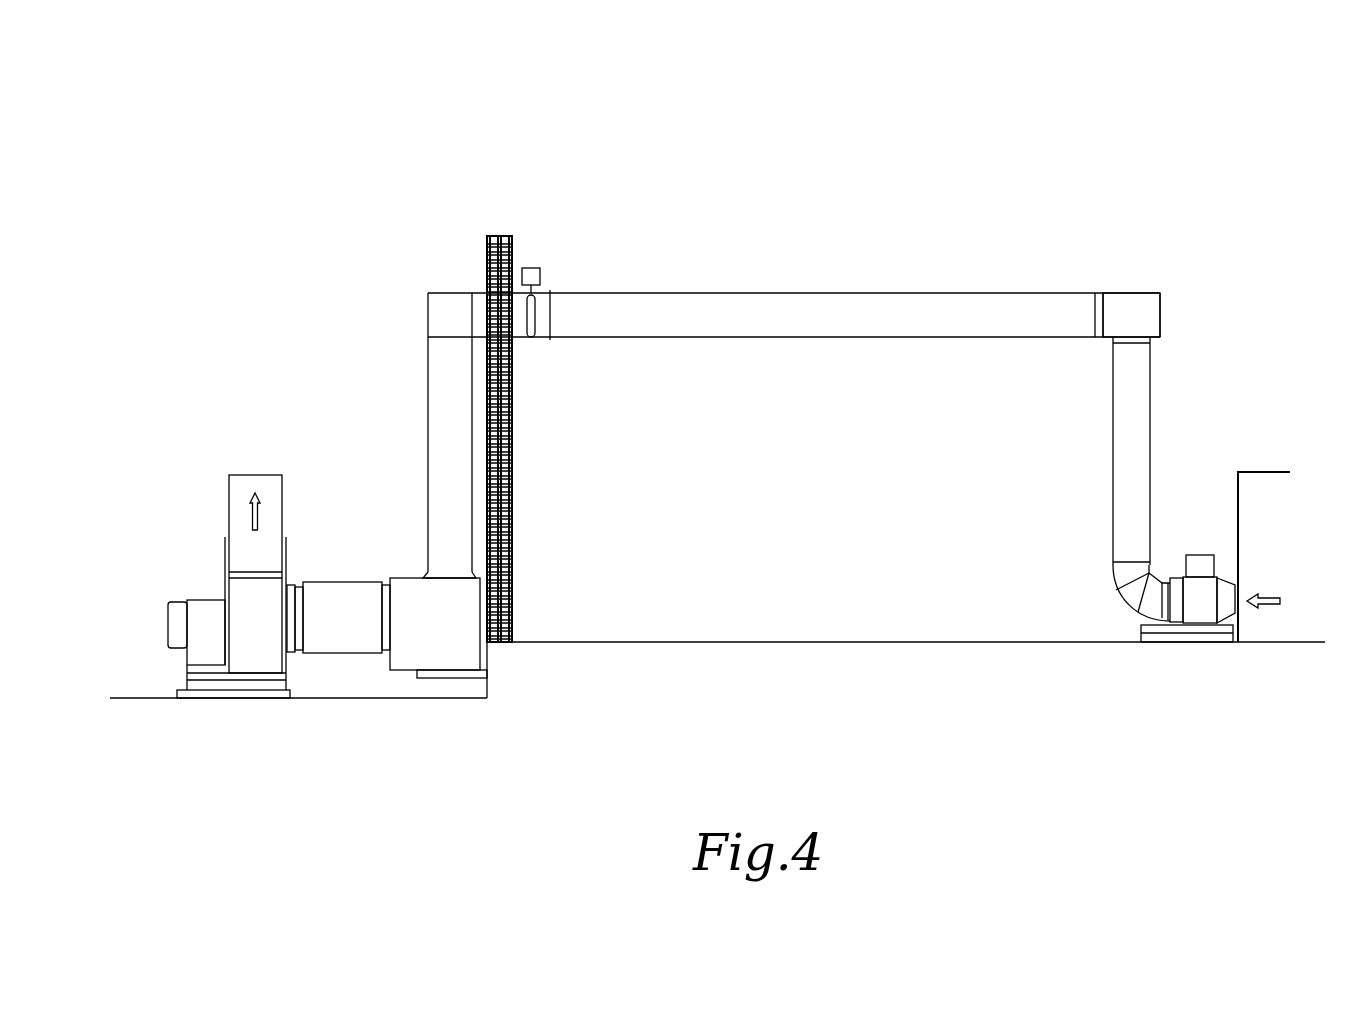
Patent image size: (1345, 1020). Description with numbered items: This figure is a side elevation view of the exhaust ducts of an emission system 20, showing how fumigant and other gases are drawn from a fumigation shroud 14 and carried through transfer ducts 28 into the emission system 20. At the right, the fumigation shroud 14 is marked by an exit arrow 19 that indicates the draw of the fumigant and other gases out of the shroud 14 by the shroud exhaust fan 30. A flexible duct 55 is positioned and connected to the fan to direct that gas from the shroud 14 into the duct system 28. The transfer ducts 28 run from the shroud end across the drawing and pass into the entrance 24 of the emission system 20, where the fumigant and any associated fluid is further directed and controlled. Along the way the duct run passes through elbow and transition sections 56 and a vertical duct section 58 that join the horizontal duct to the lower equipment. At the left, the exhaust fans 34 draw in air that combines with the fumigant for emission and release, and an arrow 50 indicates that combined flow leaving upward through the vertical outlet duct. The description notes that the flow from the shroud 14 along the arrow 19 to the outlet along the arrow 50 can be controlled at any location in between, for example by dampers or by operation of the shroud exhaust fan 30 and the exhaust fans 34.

The emission system 20 is at (526, 80).
The transfer duct 28 is at (895, 293).
The duct elbow 58 is at (448, 293).
The duct transition 56 is at (447, 672).
The entrance 24 is at (362, 655).
The exhaust fan 34 is at (206, 657).
The arrow 50 is at (252, 515).
The flexible duct 55 is at (1128, 602).
The exhaust fan 30 is at (1203, 618).
The fumigation shroud 14 is at (1263, 472).
The exit arrow 19 is at (1267, 595).